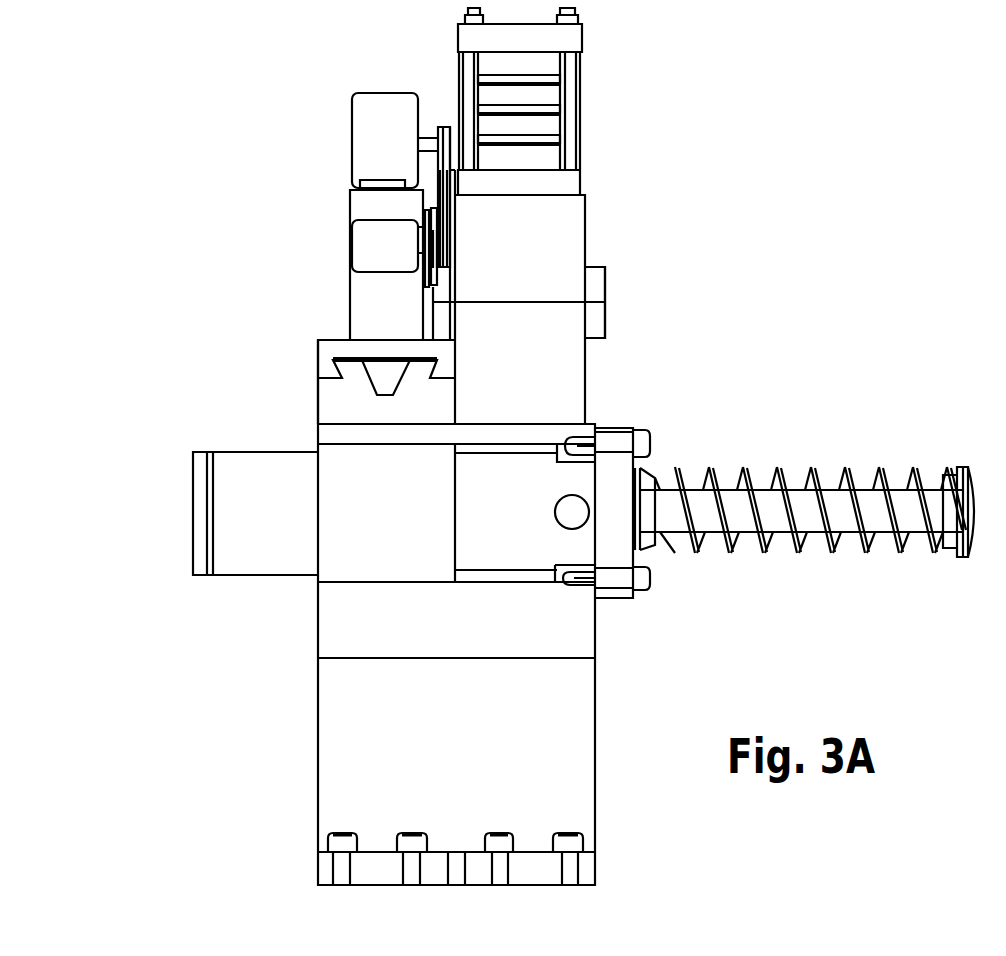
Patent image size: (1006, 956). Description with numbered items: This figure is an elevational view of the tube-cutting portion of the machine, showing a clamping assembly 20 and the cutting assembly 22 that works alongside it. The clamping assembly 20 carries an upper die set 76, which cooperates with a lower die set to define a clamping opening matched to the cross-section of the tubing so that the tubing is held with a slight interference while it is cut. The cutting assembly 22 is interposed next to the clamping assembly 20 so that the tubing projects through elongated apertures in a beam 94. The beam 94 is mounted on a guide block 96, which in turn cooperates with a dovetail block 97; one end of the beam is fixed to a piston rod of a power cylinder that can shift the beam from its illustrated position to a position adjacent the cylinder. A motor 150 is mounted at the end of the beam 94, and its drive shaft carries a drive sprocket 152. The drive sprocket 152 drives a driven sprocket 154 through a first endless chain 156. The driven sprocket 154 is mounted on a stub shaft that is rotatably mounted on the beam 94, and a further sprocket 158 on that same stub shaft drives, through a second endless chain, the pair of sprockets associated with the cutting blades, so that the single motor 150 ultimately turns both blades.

The clamping assembly 20 is at (620, 89).
The cutting assembly 22 is at (318, 245).
The upper die set 76 is at (600, 267).
The beam 94 is at (363, 200).
The guide block 96 is at (322, 352).
The dovetail block 97 is at (330, 398).
The motor 150 is at (368, 95).
The drive sprocket 152 is at (451, 128).
The driven sprocket 154 is at (438, 257).
The first endless chain 156 is at (445, 186).
The sprocket 158 is at (437, 228).